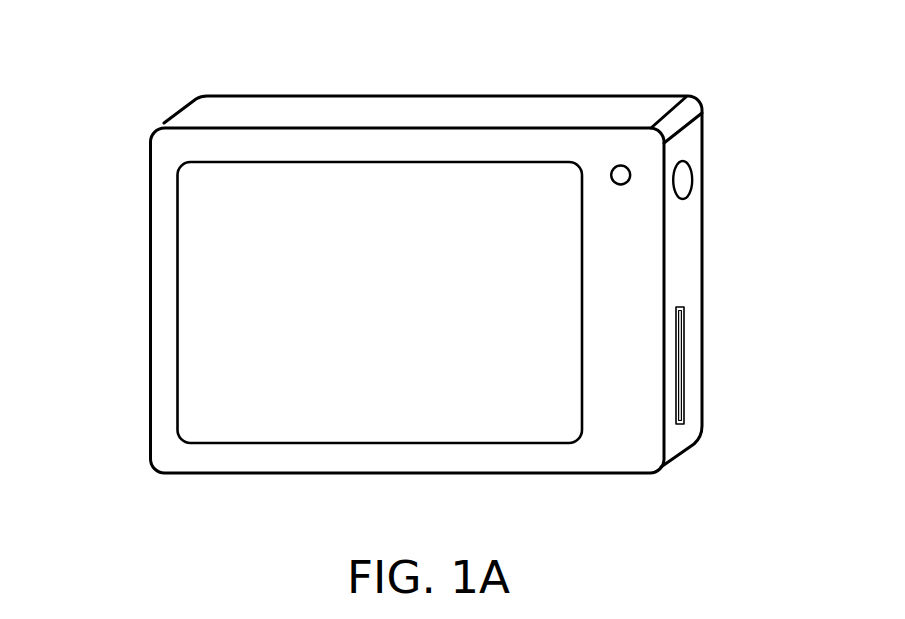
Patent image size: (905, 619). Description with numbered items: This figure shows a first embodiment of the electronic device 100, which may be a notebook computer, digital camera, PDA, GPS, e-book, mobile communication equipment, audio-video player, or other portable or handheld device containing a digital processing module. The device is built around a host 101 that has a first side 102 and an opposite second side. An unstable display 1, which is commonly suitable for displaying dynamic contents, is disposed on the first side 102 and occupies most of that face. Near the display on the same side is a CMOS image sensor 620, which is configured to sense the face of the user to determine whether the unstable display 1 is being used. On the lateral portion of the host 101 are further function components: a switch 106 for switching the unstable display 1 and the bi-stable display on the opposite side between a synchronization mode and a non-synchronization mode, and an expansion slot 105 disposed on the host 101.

The electronic device 100 is at (90, 432).
The unstable display 1 is at (190, 287).
The host 101 is at (685, 265).
The first side 102 is at (605, 150).
The expansion slot 105 is at (680, 393).
The switch 106 is at (684, 183).
The CMOS image sensor 620 is at (631, 172).